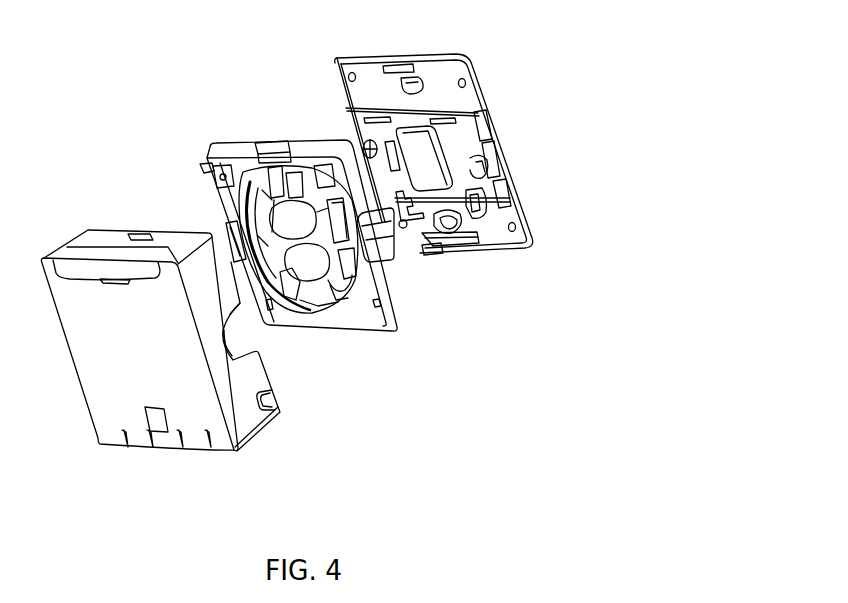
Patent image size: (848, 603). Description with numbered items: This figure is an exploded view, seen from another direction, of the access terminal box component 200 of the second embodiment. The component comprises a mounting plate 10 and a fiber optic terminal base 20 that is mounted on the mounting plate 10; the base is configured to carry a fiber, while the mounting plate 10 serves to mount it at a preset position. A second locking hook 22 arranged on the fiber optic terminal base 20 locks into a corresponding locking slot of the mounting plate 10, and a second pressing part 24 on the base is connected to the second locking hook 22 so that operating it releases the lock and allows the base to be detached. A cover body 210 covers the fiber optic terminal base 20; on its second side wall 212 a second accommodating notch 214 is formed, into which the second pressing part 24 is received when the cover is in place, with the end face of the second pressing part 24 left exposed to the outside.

The access terminal box component 200 is at (156, 110).
The mounting plate 10 is at (473, 64).
The fiber optic terminal base 20 is at (390, 328).
The second locking hook 22 is at (436, 256).
The second pressing part 24 is at (376, 243).
The cover body 210 is at (233, 452).
The second side wall 212 is at (240, 387).
The second accommodating notch 214 is at (237, 338).